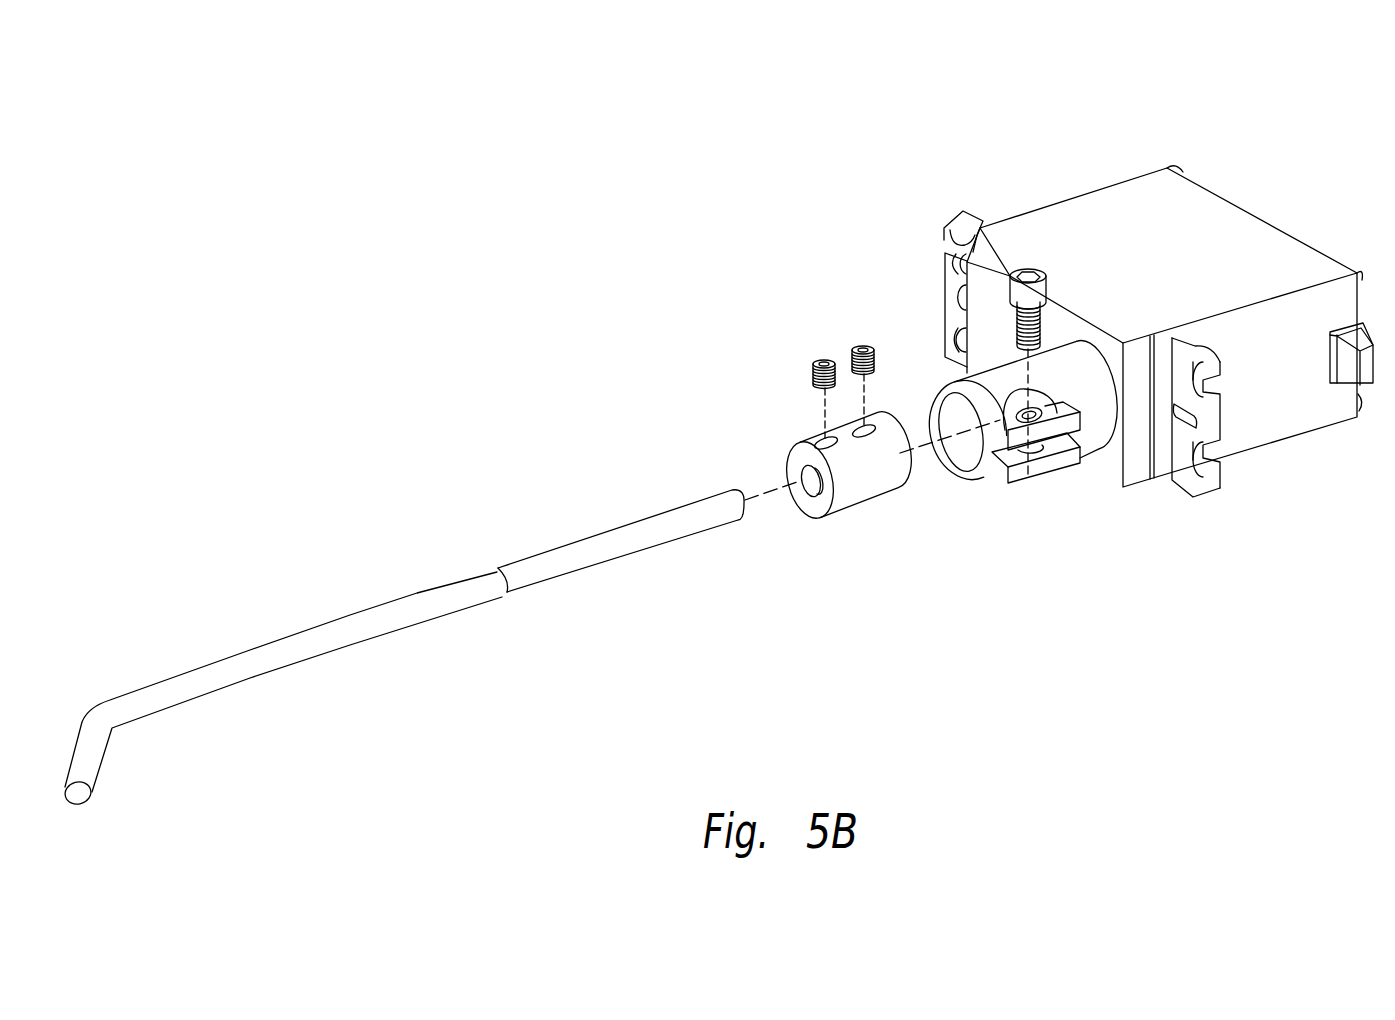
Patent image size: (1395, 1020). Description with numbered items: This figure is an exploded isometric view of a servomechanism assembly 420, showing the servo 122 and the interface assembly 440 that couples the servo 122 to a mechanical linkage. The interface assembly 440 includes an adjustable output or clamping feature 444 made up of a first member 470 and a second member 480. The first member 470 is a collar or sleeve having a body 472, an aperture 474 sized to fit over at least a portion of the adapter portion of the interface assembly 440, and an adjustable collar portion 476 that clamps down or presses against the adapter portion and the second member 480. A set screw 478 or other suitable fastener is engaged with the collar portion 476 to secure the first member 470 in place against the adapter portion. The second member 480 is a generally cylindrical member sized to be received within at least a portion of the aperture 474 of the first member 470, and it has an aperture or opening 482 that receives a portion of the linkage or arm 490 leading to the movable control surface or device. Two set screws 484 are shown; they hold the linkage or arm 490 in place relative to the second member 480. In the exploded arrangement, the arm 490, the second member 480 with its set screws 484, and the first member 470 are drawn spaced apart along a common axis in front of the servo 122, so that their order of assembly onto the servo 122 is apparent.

The servomechanism assembly 420 is at (1180, 86).
The servo 122 is at (1287, 440).
The interface assembly 440 is at (800, 660).
The output feature 444 is at (856, 325).
The first member 470 is at (963, 378).
The body 472 is at (960, 482).
The aperture 474 is at (953, 450).
The collar portion 476 is at (1112, 442).
The set screw 478 is at (1043, 271).
The second member 480 is at (857, 503).
The aperture 482 is at (795, 500).
The set screws 484 is at (858, 350).
The linkage or arm 490 is at (523, 583).